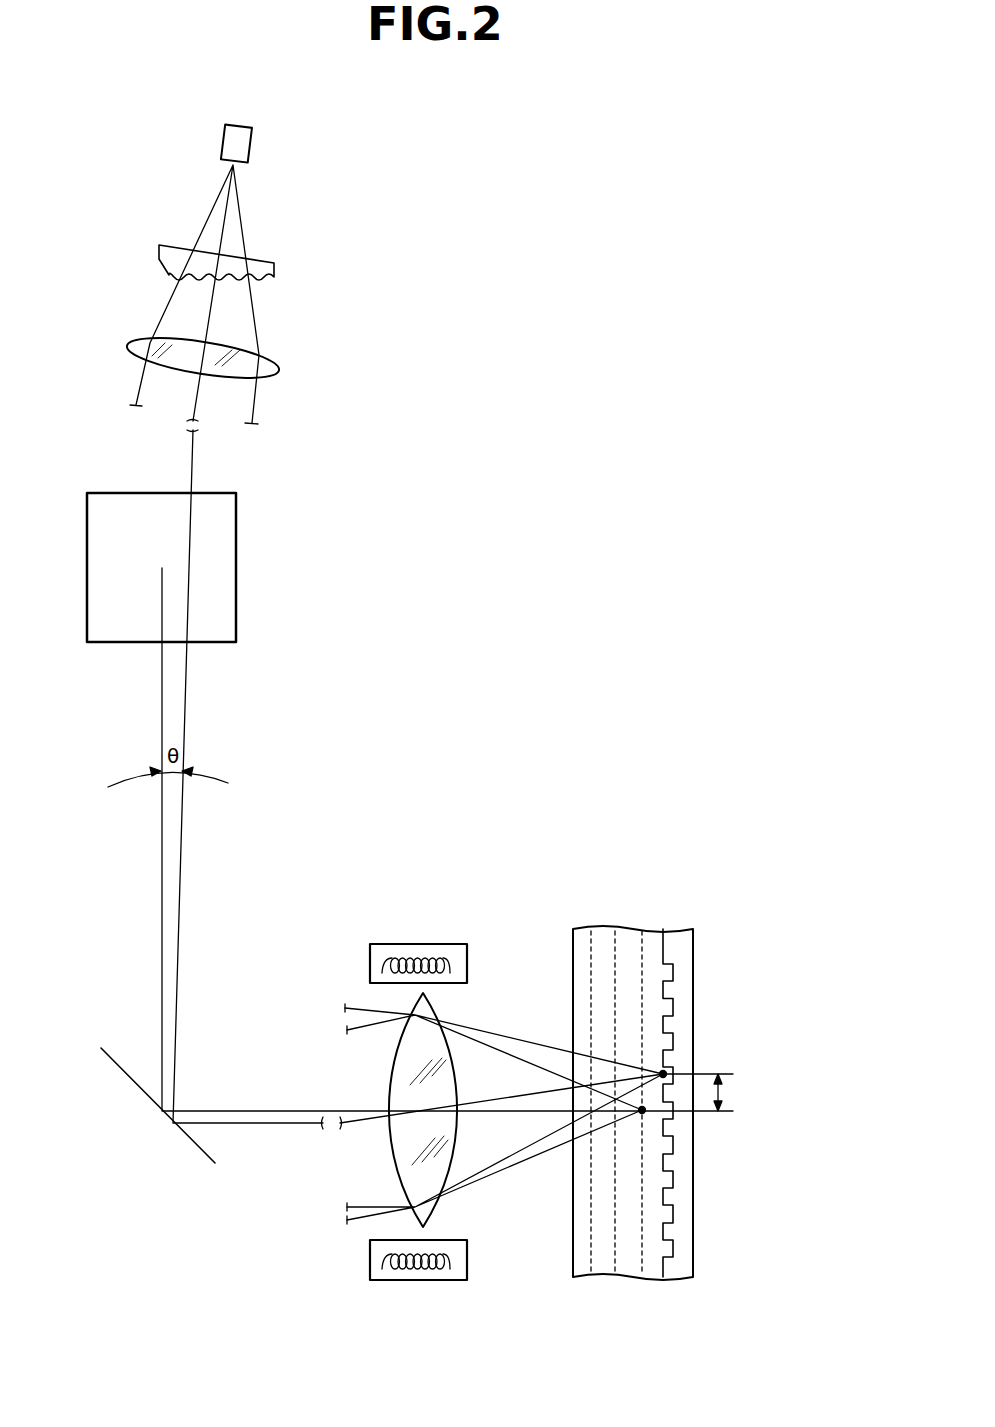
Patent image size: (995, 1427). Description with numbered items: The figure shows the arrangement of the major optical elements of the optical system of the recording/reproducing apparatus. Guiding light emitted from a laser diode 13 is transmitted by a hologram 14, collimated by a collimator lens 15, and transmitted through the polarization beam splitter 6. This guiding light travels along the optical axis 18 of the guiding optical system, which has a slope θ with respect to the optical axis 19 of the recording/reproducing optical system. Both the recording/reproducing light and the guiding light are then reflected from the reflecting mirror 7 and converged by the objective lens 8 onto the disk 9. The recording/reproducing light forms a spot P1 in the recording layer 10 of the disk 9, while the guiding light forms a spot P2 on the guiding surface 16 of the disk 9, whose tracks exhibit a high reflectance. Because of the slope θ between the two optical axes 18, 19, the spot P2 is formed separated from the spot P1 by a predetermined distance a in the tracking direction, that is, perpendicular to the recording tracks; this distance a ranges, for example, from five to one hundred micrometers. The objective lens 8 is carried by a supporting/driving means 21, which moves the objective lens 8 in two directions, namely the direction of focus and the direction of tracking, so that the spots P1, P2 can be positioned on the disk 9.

The laser diode 13 is at (252, 142).
The hologram 14 is at (275, 265).
The collimator lens 15 is at (280, 363).
The polarization beam splitter 6 is at (237, 562).
The optical axis of recording/reproducing optical system 19 is at (160, 683).
The optical axis of guiding optical system 18 is at (188, 683).
The reflecting mirror 7 is at (135, 1083).
The objective lens 8 is at (393, 1165).
The supporting/driving means 21 is at (368, 1262).
The disk 9 is at (700, 953).
The recording layer 10 is at (597, 935).
The guiding surface 16 is at (673, 1004).
The spot of guiding light P2 is at (661, 1072).
The spot of recording/reproducing light P1 is at (641, 1113).
The predetermined distance a is at (728, 1092).